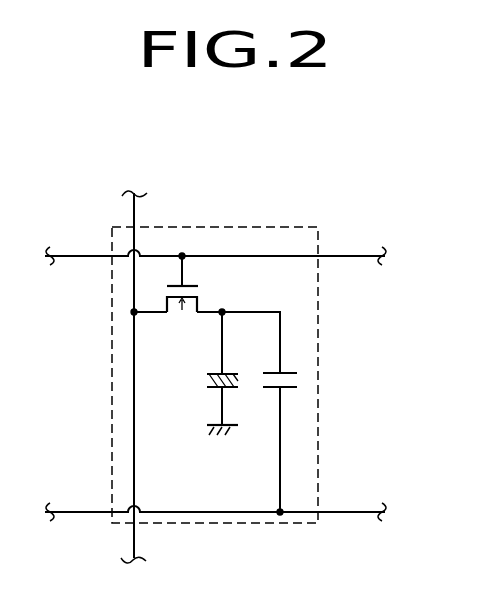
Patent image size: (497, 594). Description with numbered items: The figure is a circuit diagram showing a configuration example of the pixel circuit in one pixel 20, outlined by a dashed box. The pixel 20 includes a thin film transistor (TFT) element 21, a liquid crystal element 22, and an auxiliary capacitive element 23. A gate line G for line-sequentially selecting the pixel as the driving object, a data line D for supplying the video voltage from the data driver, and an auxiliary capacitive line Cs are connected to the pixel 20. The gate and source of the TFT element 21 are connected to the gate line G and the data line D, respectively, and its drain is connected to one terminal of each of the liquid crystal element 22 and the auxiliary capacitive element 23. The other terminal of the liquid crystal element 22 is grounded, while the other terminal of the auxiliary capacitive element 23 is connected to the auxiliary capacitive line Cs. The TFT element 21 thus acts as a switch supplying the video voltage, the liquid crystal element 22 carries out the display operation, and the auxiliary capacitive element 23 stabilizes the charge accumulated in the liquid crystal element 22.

The pixel 20 is at (247, 227).
The thin film transistor (TFT) element 21 is at (158, 288).
The liquid crystal element 22 is at (197, 380).
The auxiliary capacitive element 23 is at (300, 379).
The data line D is at (134, 205).
The gate line G is at (354, 256).
The auxiliary capacitive line Cs is at (357, 512).